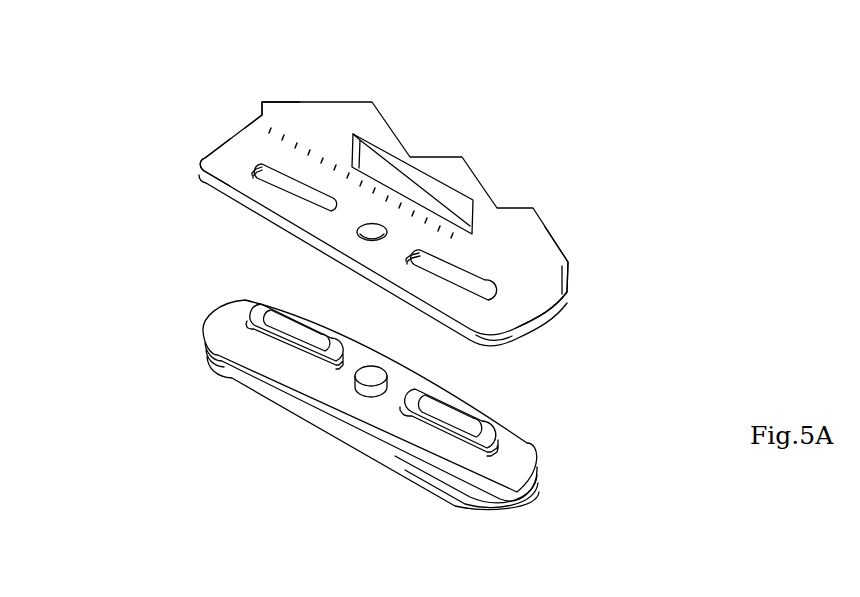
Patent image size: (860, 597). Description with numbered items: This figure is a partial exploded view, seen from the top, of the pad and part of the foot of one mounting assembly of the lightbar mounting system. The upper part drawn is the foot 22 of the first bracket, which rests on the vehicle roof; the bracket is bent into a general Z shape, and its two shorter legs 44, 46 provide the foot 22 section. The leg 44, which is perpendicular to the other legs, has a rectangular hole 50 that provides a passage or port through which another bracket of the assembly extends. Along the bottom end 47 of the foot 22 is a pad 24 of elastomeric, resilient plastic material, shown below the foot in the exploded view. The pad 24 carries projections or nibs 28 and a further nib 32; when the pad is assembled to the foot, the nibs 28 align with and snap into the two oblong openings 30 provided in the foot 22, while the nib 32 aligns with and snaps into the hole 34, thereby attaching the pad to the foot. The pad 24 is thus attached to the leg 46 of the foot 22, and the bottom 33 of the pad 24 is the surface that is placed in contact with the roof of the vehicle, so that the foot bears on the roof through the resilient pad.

The foot 22 is at (223, 147).
The pad 24 is at (537, 470).
The nibs 28 is at (300, 328).
The oblong openings 30 is at (290, 180).
The nib 32 is at (372, 384).
The bottom 33 is at (495, 508).
The hole 34 is at (357, 231).
The leg 44 is at (262, 117).
The leg 46 is at (225, 166).
The bottom end 47 is at (543, 318).
The rectangular hole 50 is at (468, 213).